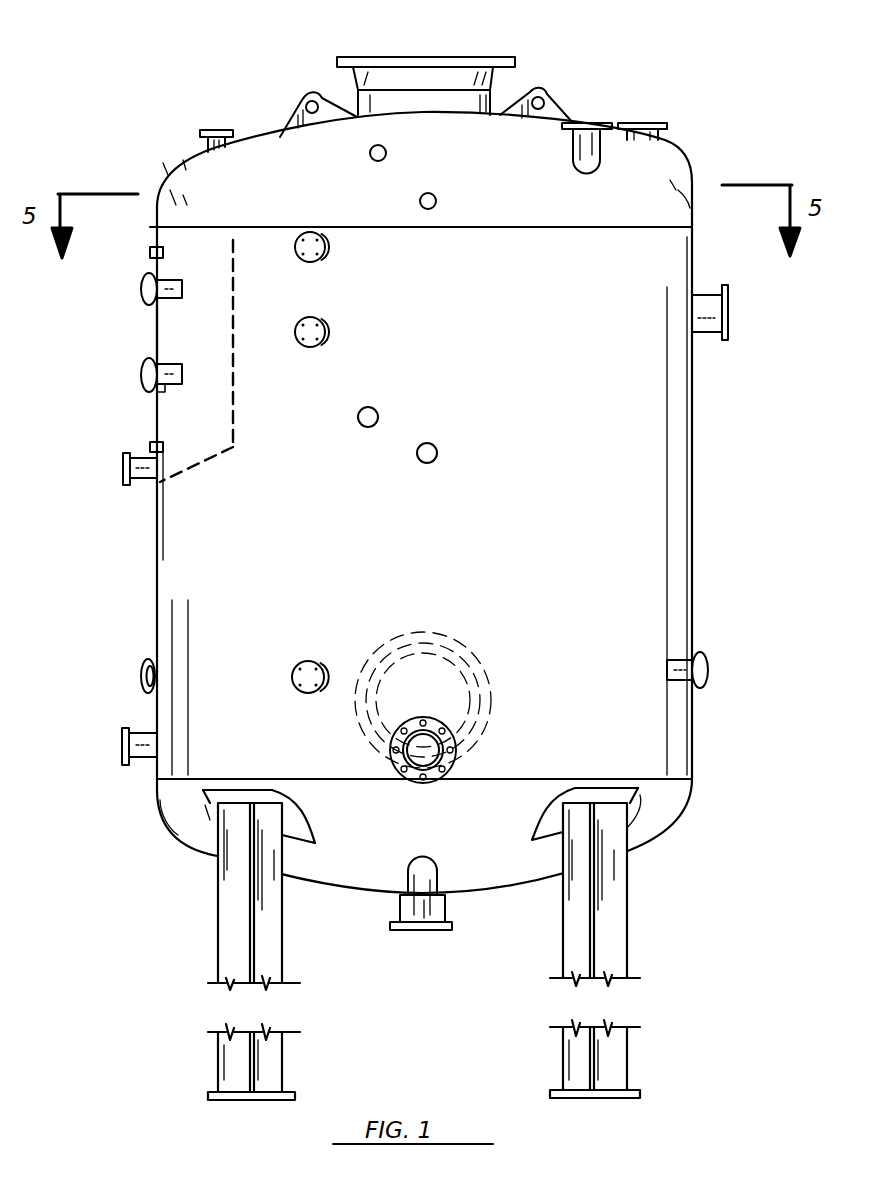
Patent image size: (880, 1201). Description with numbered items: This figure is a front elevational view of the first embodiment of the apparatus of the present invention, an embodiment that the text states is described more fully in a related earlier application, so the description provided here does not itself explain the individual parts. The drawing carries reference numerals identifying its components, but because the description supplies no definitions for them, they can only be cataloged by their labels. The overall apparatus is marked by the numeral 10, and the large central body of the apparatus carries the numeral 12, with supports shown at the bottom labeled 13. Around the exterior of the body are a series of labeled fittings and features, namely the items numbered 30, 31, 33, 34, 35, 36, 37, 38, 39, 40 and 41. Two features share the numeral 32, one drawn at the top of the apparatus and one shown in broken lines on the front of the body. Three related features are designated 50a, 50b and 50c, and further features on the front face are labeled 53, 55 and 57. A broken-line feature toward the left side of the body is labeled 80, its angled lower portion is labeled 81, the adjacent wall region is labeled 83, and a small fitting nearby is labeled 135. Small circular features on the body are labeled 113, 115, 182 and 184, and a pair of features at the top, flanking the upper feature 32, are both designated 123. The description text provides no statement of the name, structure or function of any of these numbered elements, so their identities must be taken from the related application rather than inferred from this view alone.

The vessel assembly 10 is at (610, 68).
The vessel shell 12 is at (692, 480).
The support legs 13 is at (284, 930).
The side nozzle 30 is at (729, 298).
The small fitting 31 is at (150, 250).
The manway 32 is at (455, 58).
The side nozzle 33 is at (141, 290).
The top nozzle 34 is at (226, 128).
The side nozzle 35 is at (141, 385).
The top nozzle 36 is at (600, 122).
The small fitting 37 is at (150, 444).
The top nozzle 38 is at (668, 123).
The bottom drain nozzle 39 is at (420, 930).
The side nozzle 40 is at (125, 468).
The side nozzle 41 is at (121, 745).
The sight glass nozzle 50a is at (705, 660).
The sight glass nozzle 50b is at (350, 648).
The sight glass nozzle 50c is at (144, 666).
The flanged nozzle 53 is at (322, 255).
The flanged nozzle 55 is at (440, 784).
The flanged nozzle 57 is at (326, 333).
The internal baffle 80 is at (235, 405).
The baffle lower edge 81 is at (196, 470).
The vessel side wall 83 is at (160, 334).
The sensor port 113 is at (376, 410).
The sensor port 115 is at (386, 150).
The lifting lug 123 is at (312, 92).
The nozzle fitting 135 is at (160, 392).
The sensor port 182 is at (436, 198).
The sensor port 184 is at (438, 450).